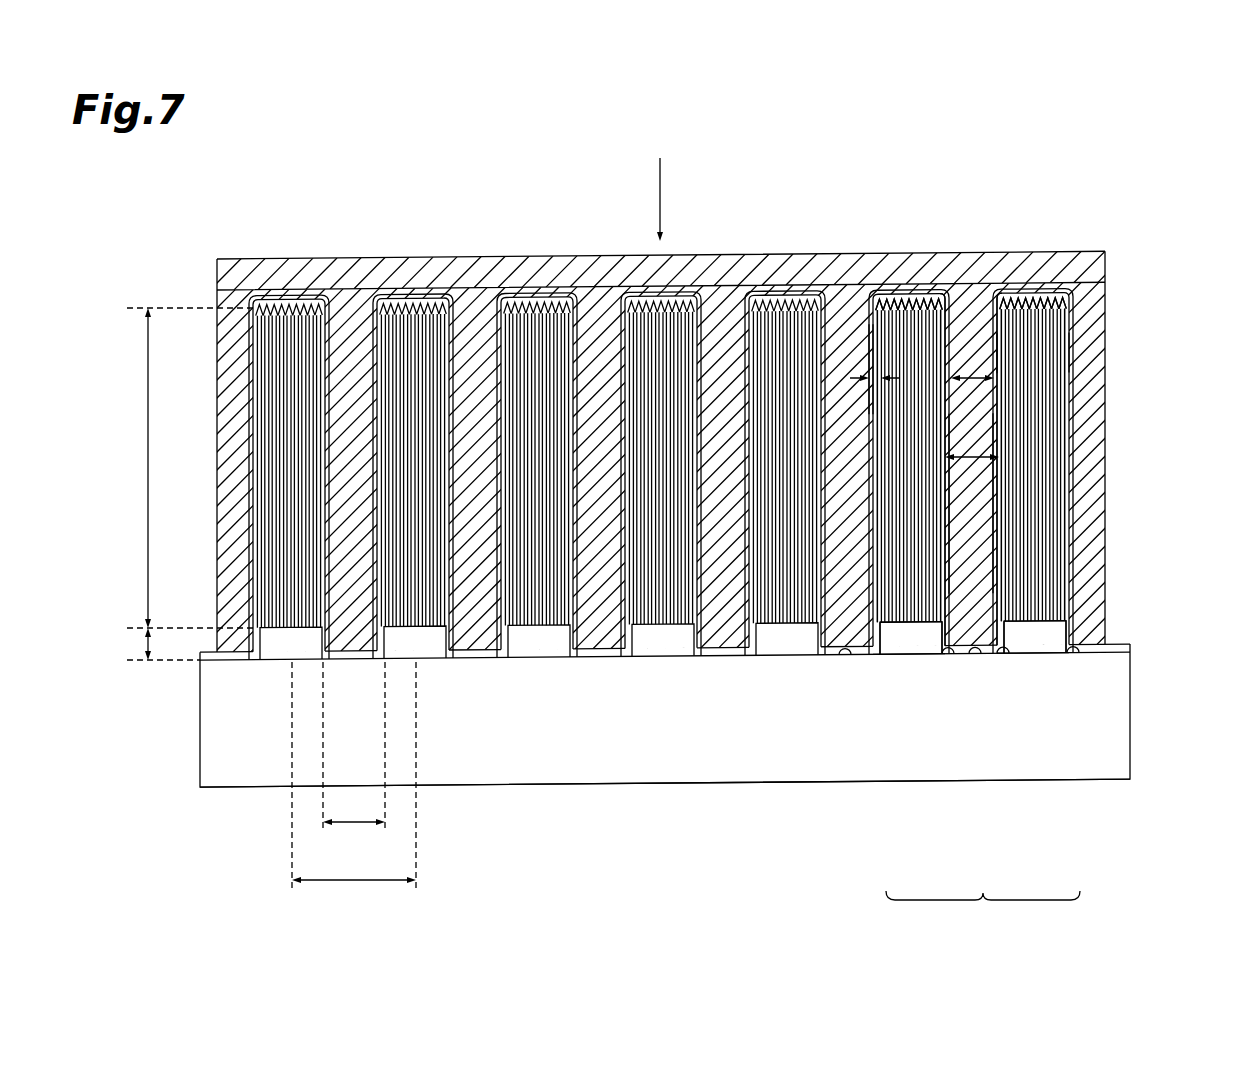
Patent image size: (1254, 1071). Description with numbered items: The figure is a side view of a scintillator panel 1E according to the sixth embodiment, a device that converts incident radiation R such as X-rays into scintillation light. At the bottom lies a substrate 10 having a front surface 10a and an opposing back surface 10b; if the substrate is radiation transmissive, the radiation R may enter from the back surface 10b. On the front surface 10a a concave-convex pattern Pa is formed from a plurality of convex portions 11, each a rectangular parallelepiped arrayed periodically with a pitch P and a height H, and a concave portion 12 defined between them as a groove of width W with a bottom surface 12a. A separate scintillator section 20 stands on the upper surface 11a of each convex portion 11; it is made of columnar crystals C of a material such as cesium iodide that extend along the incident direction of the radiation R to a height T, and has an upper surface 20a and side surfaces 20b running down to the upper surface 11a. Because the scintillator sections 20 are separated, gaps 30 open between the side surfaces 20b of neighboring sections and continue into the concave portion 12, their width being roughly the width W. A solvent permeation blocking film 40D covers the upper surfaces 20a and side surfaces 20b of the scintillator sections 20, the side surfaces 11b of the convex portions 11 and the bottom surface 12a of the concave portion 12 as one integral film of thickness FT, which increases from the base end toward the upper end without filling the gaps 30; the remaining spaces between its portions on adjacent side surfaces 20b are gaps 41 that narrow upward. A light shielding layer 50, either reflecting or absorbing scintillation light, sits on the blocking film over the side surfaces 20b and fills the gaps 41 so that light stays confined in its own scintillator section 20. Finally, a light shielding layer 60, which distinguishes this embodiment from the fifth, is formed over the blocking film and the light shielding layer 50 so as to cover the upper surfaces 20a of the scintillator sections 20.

The scintillator panel 1E is at (1195, 212).
The substrate 10 is at (1133, 710).
The front surface 10a is at (1122, 642).
The back surface 10b is at (1122, 782).
The convex portion 11 is at (913, 622).
The upper surface of convex portion 11a is at (912, 632).
The side surface of convex portion 11b is at (878, 650).
The concave portion 12 is at (975, 664).
The bottom surface of concave portion 12a is at (836, 654).
The scintillator section 20 is at (913, 291).
The upper surface of scintillator section 20a is at (928, 312).
The side surface of scintillator section 20b is at (873, 318).
The gap 30 is at (990, 437).
The solvent permeation blocking film 40D is at (870, 400).
The gap 41 is at (967, 372).
The light shielding layer 50 is at (988, 566).
The light shielding layer 60 is at (760, 280).
The columnar crystal C is at (1040, 357).
The thickness of solvent permeation blocking film FT is at (873, 376).
The radiation R is at (664, 184).
The height of scintillator section T is at (189, 468).
The height of convex portion H is at (161, 644).
The width of concave portion W is at (354, 747).
The pitch P is at (354, 776).
The concave-convex pattern Pa is at (983, 912).